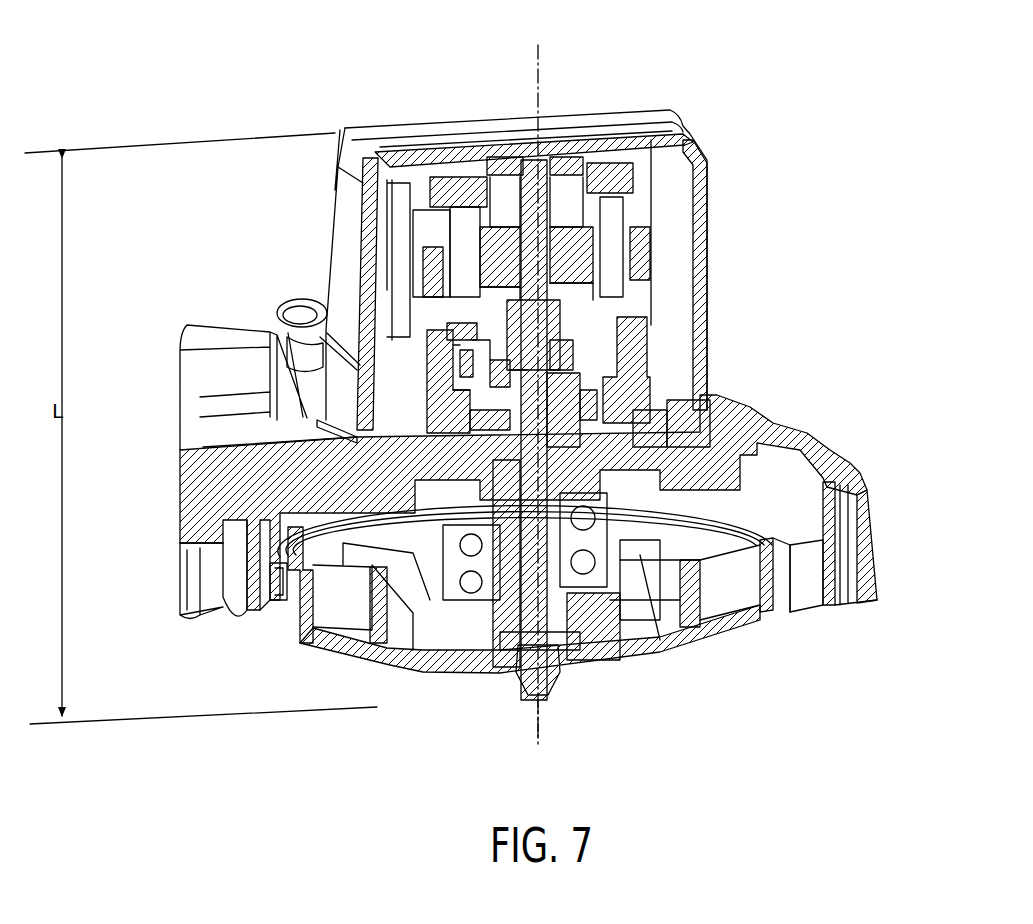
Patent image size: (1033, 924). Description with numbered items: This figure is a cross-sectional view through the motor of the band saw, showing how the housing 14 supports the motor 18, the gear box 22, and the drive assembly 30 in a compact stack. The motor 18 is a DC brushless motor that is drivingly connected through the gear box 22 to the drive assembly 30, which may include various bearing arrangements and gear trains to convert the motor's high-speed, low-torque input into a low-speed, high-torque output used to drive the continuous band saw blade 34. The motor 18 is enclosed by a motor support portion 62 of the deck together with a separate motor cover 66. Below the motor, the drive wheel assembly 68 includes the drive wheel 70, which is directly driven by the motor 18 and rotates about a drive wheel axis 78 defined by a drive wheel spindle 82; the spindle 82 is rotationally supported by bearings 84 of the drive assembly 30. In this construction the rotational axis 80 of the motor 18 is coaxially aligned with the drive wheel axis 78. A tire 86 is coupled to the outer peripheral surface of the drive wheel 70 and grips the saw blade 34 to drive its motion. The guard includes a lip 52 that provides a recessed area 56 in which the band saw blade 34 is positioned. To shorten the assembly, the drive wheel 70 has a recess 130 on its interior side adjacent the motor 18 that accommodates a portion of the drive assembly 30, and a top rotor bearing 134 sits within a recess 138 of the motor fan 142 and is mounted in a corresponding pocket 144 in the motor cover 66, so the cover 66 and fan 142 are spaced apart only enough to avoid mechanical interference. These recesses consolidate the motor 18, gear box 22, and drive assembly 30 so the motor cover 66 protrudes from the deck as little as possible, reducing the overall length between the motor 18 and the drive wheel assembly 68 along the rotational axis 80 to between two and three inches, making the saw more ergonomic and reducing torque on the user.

The housing 14 is at (240, 268).
The motor 18 is at (660, 250).
The gear box 22 is at (665, 366).
The drive assembly 30 is at (660, 466).
The band saw blade 34 is at (782, 585).
The lip 52 is at (873, 535).
The recessed area 56 is at (808, 578).
The motor support portion 62 is at (335, 390).
The motor cover 66 is at (393, 137).
The drive wheel assembly 68 is at (311, 733).
The drive wheel 70 is at (703, 640).
The drive wheel axis 78 is at (540, 738).
The rotational axis 80 is at (546, 66).
The drive wheel spindle 82 is at (515, 607).
The bearings 84 is at (467, 520).
The tire 86 is at (268, 603).
The recess 130 is at (656, 572).
The top rotor bearing 134 is at (590, 150).
The recess 138 is at (470, 188).
The motor fan 142 is at (618, 166).
The pocket 144 is at (490, 168).